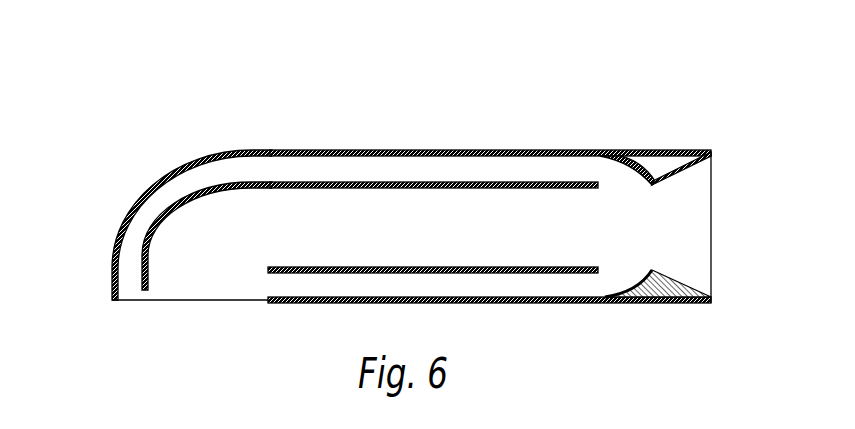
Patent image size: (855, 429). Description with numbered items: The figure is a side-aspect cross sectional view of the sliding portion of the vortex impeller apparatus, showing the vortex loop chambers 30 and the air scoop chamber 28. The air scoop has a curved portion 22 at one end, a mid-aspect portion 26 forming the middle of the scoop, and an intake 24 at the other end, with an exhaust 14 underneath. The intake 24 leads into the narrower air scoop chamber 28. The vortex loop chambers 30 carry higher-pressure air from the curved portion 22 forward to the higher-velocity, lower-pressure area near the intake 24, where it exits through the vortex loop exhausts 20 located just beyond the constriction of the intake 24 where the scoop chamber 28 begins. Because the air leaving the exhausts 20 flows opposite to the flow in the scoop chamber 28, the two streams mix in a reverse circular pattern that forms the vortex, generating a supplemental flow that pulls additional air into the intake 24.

The exhaust 14 is at (115, 303).
The vortex loop exhaust 20 is at (620, 185).
The curved portion of the scoop 22 is at (262, 147).
The intake 24 is at (697, 228).
The mid-aspect portion of the air scoop 26 is at (487, 147).
The air scoop chamber 28 is at (412, 240).
The vortex loop chamber 30 is at (165, 210).